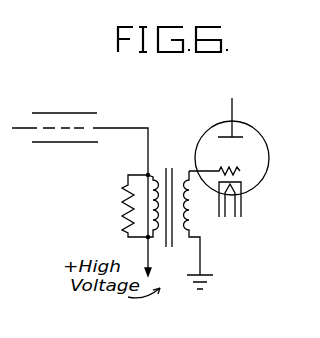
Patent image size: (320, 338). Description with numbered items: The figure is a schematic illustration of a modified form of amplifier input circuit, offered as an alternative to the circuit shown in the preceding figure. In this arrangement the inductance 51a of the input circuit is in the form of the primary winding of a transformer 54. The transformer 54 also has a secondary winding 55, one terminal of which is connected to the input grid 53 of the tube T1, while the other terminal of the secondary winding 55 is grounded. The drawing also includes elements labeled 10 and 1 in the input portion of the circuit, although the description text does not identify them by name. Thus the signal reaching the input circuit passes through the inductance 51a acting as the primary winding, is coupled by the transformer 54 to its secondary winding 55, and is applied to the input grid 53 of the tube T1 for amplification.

The upper electrode plate 10 is at (63, 129).
The lower electrode plate 1 is at (58, 142).
The inductance 51a is at (149, 172).
The input grid 53 is at (220, 168).
The transformer 54 is at (168, 248).
The secondary winding 55 is at (190, 222).
The tube T1 is at (241, 157).